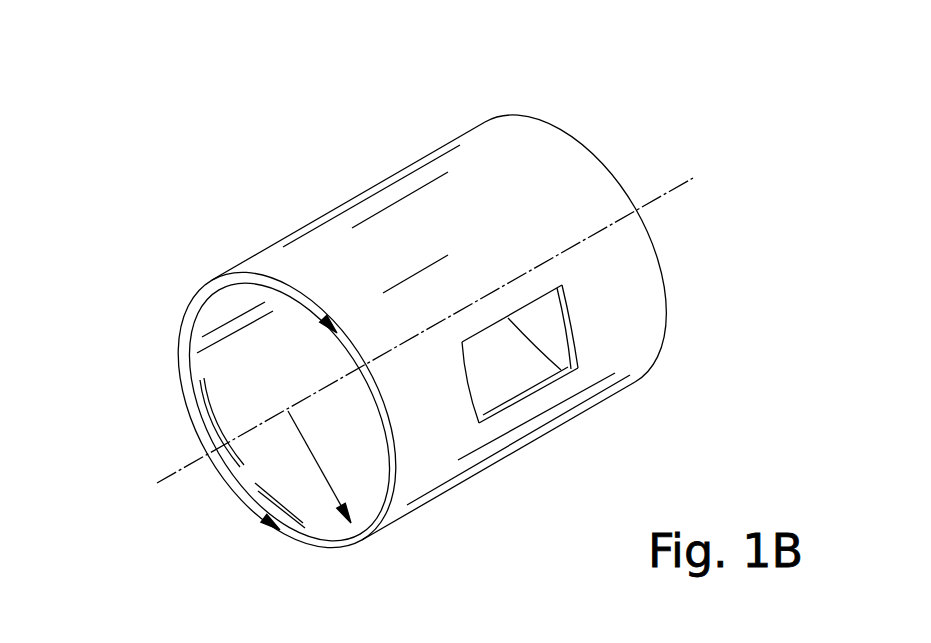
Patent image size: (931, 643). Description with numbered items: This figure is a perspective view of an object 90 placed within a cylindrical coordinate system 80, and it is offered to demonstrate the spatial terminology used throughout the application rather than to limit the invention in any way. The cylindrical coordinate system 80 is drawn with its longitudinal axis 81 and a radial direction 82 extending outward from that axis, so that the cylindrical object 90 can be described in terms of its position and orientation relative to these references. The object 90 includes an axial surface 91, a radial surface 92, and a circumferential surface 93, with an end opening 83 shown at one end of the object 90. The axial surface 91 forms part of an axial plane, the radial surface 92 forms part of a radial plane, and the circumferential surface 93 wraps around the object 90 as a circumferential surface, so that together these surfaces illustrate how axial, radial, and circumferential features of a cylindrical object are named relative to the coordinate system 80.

The cylindrical coordinate system 80 is at (600, 133).
The longitudinal axis 81 is at (172, 480).
The radial direction 82 is at (340, 478).
The end opening 83 is at (185, 303).
The object 90 is at (463, 119).
The axial surface 91 is at (545, 379).
The radial surface 92 is at (302, 532).
The circumferential surface 93 is at (398, 218).